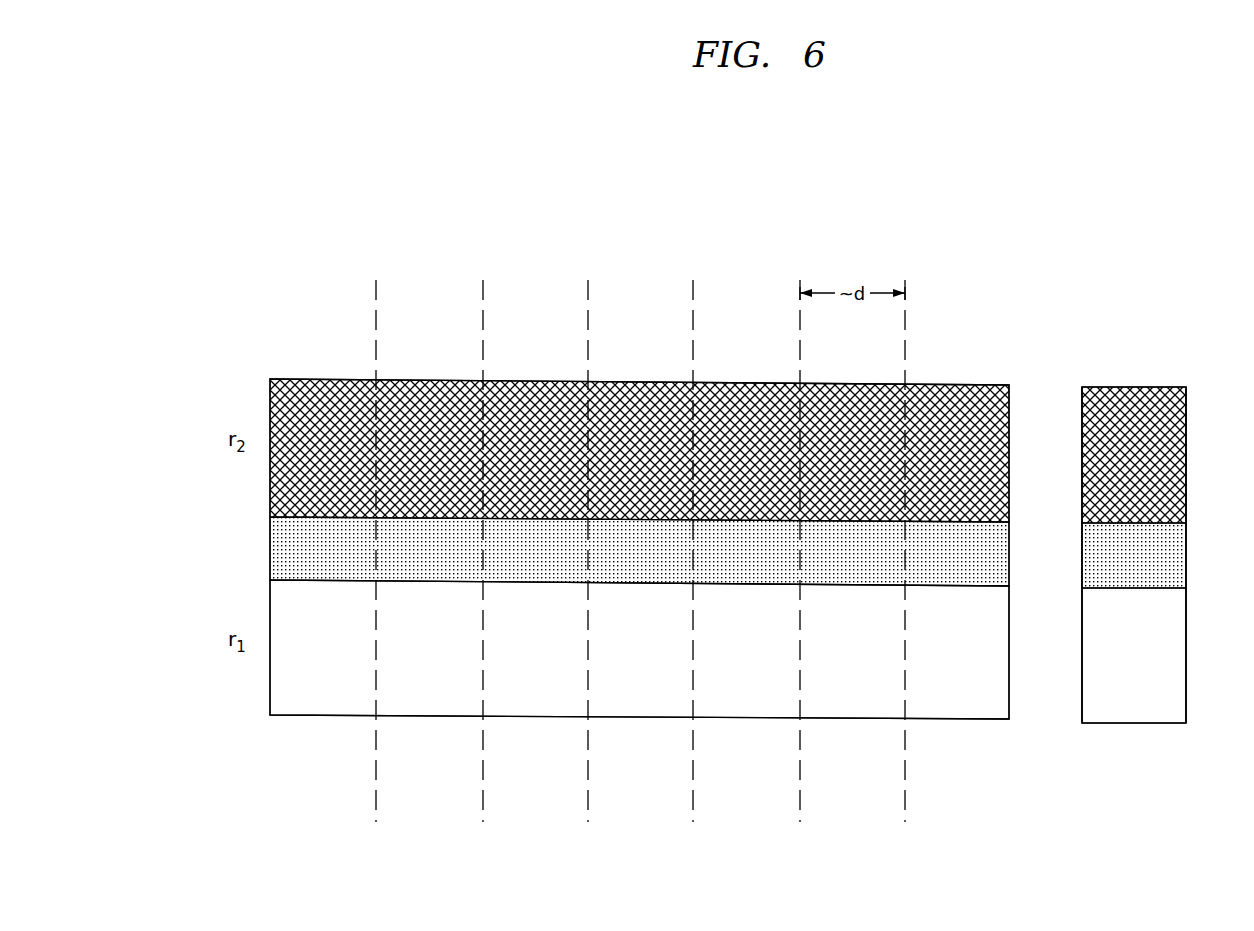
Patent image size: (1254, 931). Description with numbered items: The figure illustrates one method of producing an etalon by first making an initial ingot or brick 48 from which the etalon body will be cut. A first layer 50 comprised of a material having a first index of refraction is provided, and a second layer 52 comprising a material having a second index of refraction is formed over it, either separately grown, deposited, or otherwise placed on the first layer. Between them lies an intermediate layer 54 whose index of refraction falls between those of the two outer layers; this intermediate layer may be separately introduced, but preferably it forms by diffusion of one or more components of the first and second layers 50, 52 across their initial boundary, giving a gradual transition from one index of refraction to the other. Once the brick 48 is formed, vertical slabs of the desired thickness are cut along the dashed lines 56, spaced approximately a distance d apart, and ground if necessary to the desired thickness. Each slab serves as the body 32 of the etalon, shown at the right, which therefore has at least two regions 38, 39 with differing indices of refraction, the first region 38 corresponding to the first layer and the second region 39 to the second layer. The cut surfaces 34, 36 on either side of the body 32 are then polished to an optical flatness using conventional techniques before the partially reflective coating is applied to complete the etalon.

The ingot or brick 48 is at (445, 190).
The second layer 52 is at (326, 403).
The intermediate layer 54 is at (297, 553).
The first layer 50 is at (316, 688).
The cutting lines 56 is at (694, 272).
The body 32 is at (1134, 368).
The second region 39 is at (1160, 462).
The first region 38 is at (1158, 657).
The cut surface 34 is at (1074, 698).
The cut surface 36 is at (1194, 698).